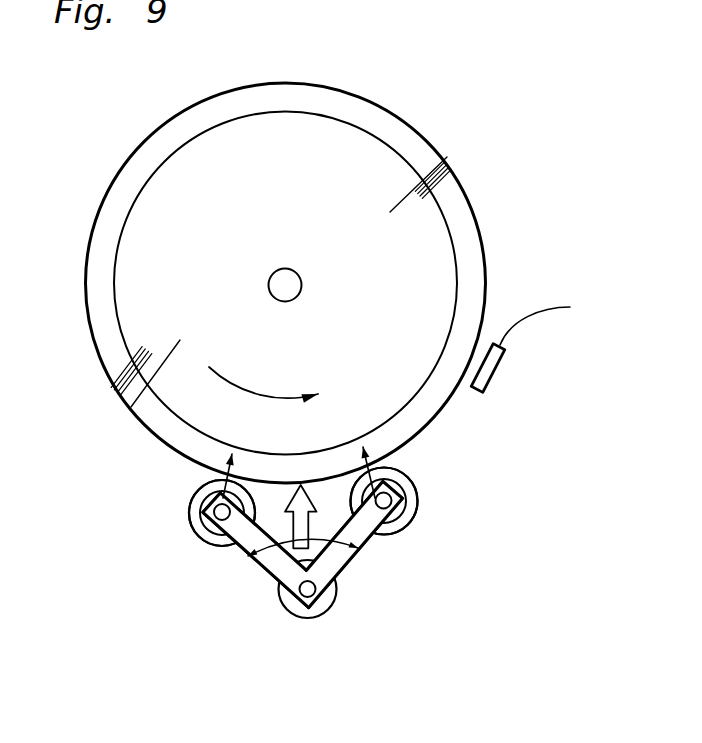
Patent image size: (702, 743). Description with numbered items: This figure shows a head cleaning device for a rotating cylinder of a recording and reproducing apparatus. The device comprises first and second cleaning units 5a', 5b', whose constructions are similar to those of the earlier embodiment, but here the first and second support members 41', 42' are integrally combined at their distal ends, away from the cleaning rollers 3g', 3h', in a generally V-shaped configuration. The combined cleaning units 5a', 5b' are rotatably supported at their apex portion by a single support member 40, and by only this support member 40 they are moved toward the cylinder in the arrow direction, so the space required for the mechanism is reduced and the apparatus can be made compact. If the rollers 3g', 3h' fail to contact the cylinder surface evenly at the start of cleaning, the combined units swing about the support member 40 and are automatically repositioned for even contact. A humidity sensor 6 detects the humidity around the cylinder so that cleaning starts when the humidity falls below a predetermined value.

The humidity sensor 6 is at (498, 362).
The support member 40 is at (322, 605).
The cleaning roller 3g' is at (196, 544).
The cleaning roller 3h' is at (433, 522).
The first support member 41' is at (253, 573).
The second support member 42' is at (385, 548).
The second cleaning unit 5b' is at (209, 579).
The first cleaning unit 5a' is at (429, 551).